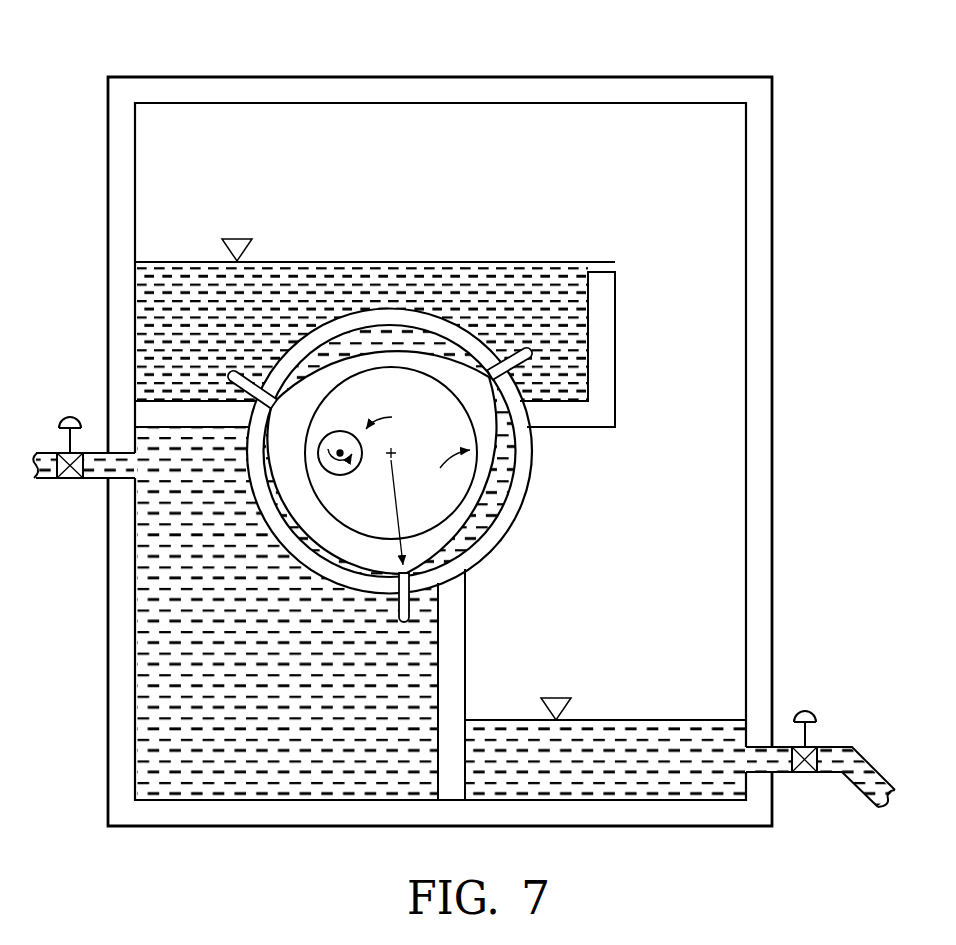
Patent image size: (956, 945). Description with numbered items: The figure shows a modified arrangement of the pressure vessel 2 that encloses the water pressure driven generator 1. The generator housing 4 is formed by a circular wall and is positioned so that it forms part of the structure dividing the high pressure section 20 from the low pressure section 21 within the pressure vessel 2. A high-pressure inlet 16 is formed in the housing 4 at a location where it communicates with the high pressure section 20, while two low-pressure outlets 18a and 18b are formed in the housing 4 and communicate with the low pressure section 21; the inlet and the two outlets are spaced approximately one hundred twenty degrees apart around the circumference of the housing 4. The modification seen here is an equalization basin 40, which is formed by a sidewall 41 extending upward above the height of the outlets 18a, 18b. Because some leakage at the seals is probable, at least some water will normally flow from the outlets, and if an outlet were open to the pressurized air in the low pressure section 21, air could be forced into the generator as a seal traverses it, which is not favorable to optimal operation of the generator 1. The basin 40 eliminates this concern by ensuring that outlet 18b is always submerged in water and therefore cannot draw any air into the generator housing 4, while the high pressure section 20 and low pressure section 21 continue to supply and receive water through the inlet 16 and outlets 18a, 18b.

The water pressure driven generator 1 is at (398, 206).
The pressure chamber 2 is at (285, 62).
The generator housing 4 is at (534, 494).
The high-pressure inlet 16 is at (415, 621).
The low-pressure outlet 18a is at (521, 342).
The low-pressure outlet 18b is at (233, 364).
The high pressure section 20 is at (323, 694).
The low pressure section 21 is at (668, 588).
The equalization basin 40 is at (596, 243).
The sidewall 41 is at (624, 329).